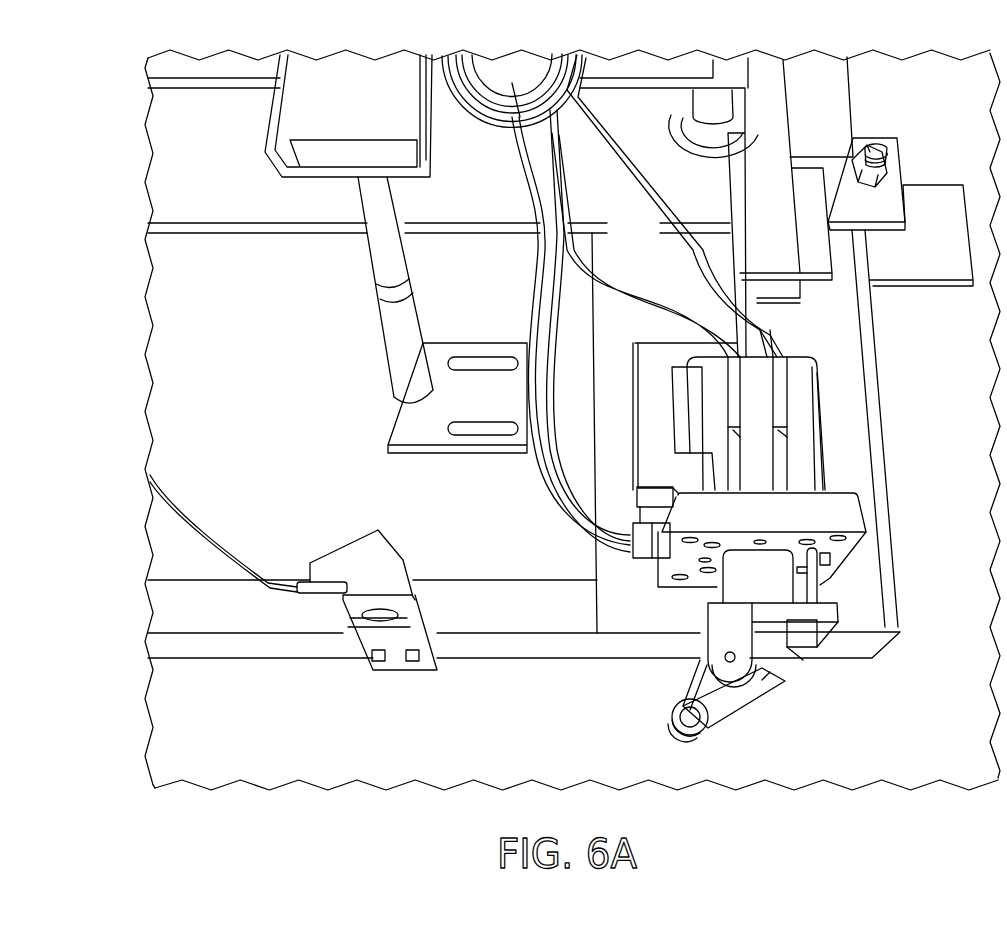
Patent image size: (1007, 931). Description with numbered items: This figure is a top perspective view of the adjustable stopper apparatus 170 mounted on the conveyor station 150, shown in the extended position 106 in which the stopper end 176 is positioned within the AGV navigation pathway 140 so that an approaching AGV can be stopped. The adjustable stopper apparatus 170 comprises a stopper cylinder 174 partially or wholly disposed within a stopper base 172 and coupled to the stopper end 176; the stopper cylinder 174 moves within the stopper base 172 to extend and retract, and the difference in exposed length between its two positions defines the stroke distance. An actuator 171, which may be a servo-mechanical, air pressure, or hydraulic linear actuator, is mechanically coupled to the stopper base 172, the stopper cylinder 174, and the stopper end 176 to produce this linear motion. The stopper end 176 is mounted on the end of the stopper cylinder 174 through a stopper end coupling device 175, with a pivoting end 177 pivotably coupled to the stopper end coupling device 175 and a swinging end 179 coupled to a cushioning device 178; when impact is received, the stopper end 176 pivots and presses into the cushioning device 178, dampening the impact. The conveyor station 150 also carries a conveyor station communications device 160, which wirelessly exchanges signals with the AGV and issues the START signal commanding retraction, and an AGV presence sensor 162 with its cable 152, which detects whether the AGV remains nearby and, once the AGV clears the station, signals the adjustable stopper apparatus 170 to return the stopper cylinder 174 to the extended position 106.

The AGV navigation pathway 140 is at (455, 730).
The conveyor station 150 is at (212, 102).
The sensor cable 152 is at (160, 605).
The conveyor station communications device 160 is at (360, 67).
The AGV presence sensor 162 is at (387, 558).
The adjustable stopper apparatus 170 is at (832, 425).
The actuator 171 is at (653, 542).
The stopper base 172 is at (848, 510).
The stopper cylinder 174 is at (783, 580).
The stopper end coupling device 175 is at (718, 633).
The stopper end 176 is at (664, 718).
The pivoting end 177 is at (700, 660).
The cushioning device 178 is at (752, 653).
The swinging end 179 is at (753, 683).
The extended position 106 is at (830, 565).